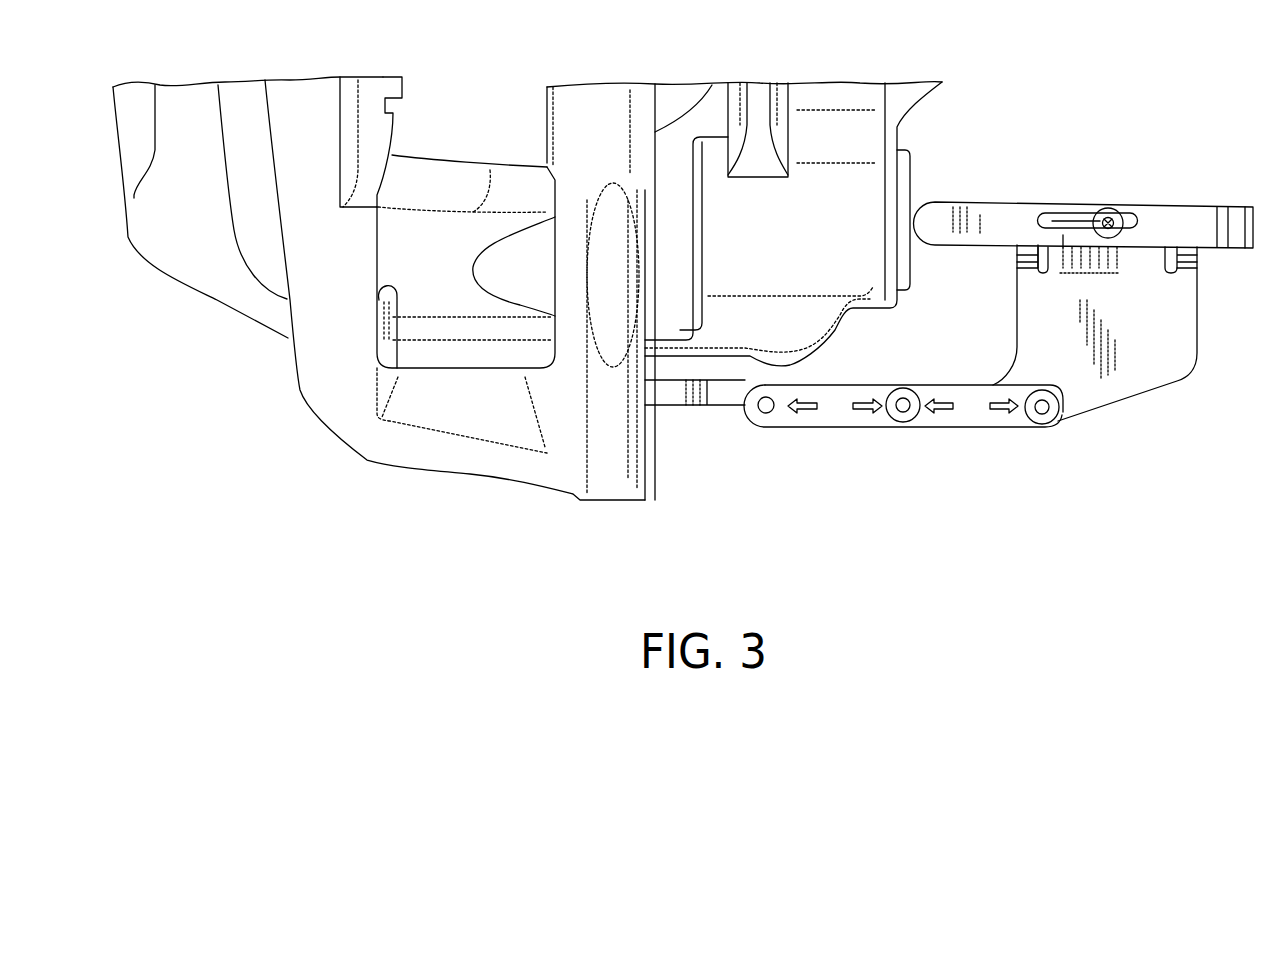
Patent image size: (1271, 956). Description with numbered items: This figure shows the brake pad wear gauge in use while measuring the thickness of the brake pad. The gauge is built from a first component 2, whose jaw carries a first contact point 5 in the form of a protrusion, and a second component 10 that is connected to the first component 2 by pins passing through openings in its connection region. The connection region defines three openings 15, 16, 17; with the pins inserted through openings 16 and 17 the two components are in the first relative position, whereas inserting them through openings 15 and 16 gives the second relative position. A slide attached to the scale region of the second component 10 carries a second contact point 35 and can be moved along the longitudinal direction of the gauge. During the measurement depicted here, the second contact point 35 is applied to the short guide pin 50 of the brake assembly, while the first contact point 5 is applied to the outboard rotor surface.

The first component 2 is at (687, 407).
The first contact point 5 is at (385, 294).
The second component 10 is at (1167, 388).
The first opening 15 is at (766, 413).
The second opening 16 is at (903, 422).
The third opening 17 is at (1052, 419).
The second contact point 35 is at (912, 213).
The short guide pin 50 is at (905, 268).